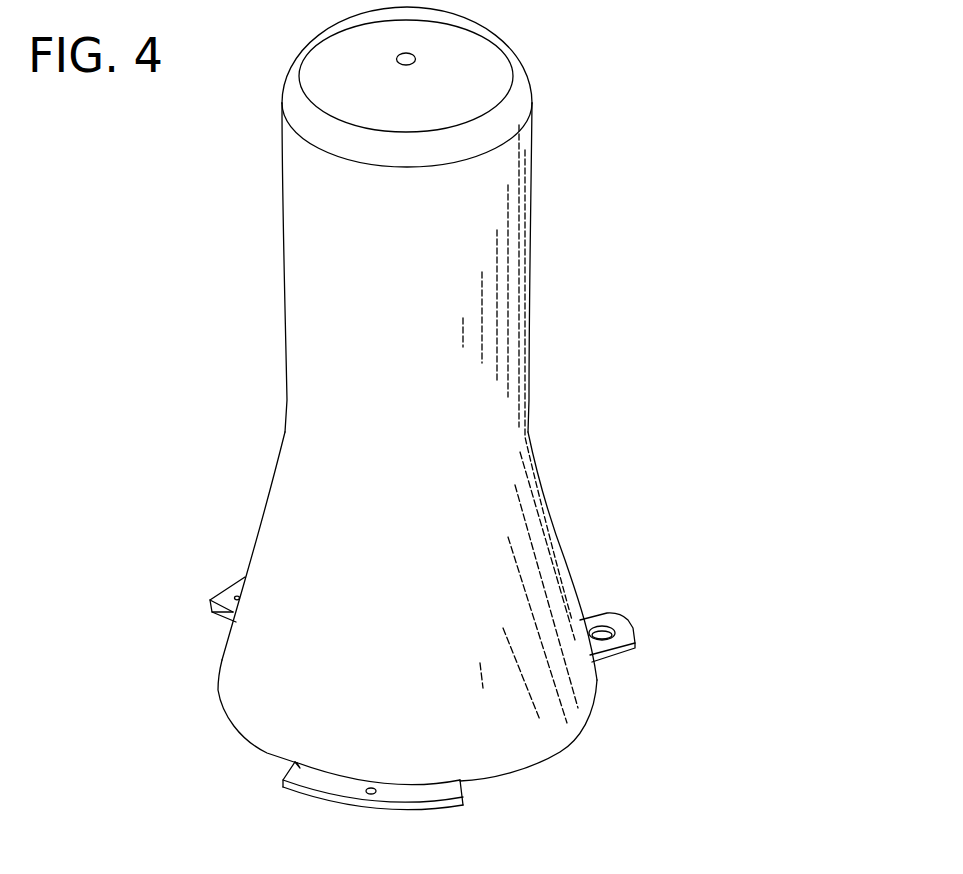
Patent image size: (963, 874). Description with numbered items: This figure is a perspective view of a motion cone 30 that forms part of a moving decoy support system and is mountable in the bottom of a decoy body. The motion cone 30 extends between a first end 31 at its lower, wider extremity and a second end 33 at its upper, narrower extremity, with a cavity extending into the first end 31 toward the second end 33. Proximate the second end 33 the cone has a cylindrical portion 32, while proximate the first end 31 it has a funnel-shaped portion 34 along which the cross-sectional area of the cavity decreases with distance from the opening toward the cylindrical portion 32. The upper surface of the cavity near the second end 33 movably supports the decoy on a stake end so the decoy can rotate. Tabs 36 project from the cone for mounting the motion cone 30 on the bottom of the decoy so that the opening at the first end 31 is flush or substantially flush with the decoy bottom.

The motion cone 30 is at (571, 33).
The first end 31 is at (236, 665).
The cylindrical portion 32 is at (531, 258).
The second end 33 is at (520, 100).
The funnel-shaped portion 34 is at (272, 510).
The tabs 36 is at (463, 798).